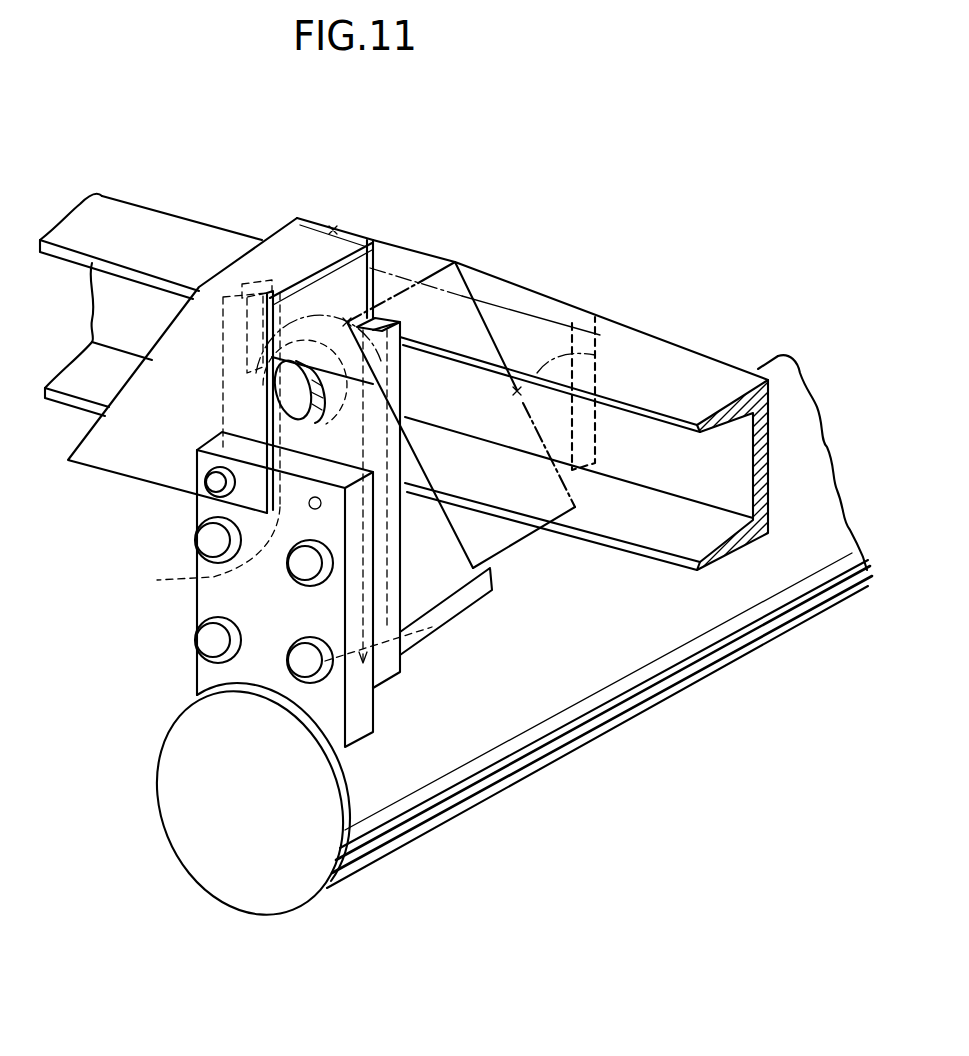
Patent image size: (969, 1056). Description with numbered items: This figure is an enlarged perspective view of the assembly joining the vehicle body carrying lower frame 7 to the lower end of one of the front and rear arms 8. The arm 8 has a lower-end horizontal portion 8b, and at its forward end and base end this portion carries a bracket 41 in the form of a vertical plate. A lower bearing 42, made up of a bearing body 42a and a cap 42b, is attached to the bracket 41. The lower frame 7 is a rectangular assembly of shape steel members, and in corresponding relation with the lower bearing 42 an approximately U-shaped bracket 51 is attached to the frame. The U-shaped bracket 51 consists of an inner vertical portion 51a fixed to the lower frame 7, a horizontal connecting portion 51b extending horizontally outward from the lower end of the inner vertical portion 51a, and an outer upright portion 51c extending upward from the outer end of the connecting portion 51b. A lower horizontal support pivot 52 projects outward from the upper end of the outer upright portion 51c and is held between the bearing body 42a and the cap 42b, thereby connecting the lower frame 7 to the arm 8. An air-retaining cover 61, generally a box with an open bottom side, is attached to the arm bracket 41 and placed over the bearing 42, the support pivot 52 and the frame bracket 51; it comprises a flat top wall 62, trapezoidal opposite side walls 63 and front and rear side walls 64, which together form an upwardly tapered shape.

The lower frame 7 is at (710, 372).
The arm 8 is at (593, 737).
The lower-end horizontal portion 8b is at (487, 772).
The bracket 41 is at (200, 590).
The lower bearing 42 is at (223, 429).
The bearing body 42a is at (395, 568).
The cap 42b is at (291, 305).
The U-shaped bracket 51 is at (480, 597).
The inner vertical portion 51a is at (527, 557).
The horizontal connecting portion 51b is at (420, 633).
The outer upright portion 51c is at (191, 553).
The horizontal support pivot 52 is at (288, 392).
The air-retaining cover 61 is at (334, 230).
The flat top wall 62 is at (347, 247).
The trapezoidal opposite side walls 63 is at (205, 458).
The front and rear side walls 64 is at (153, 333).